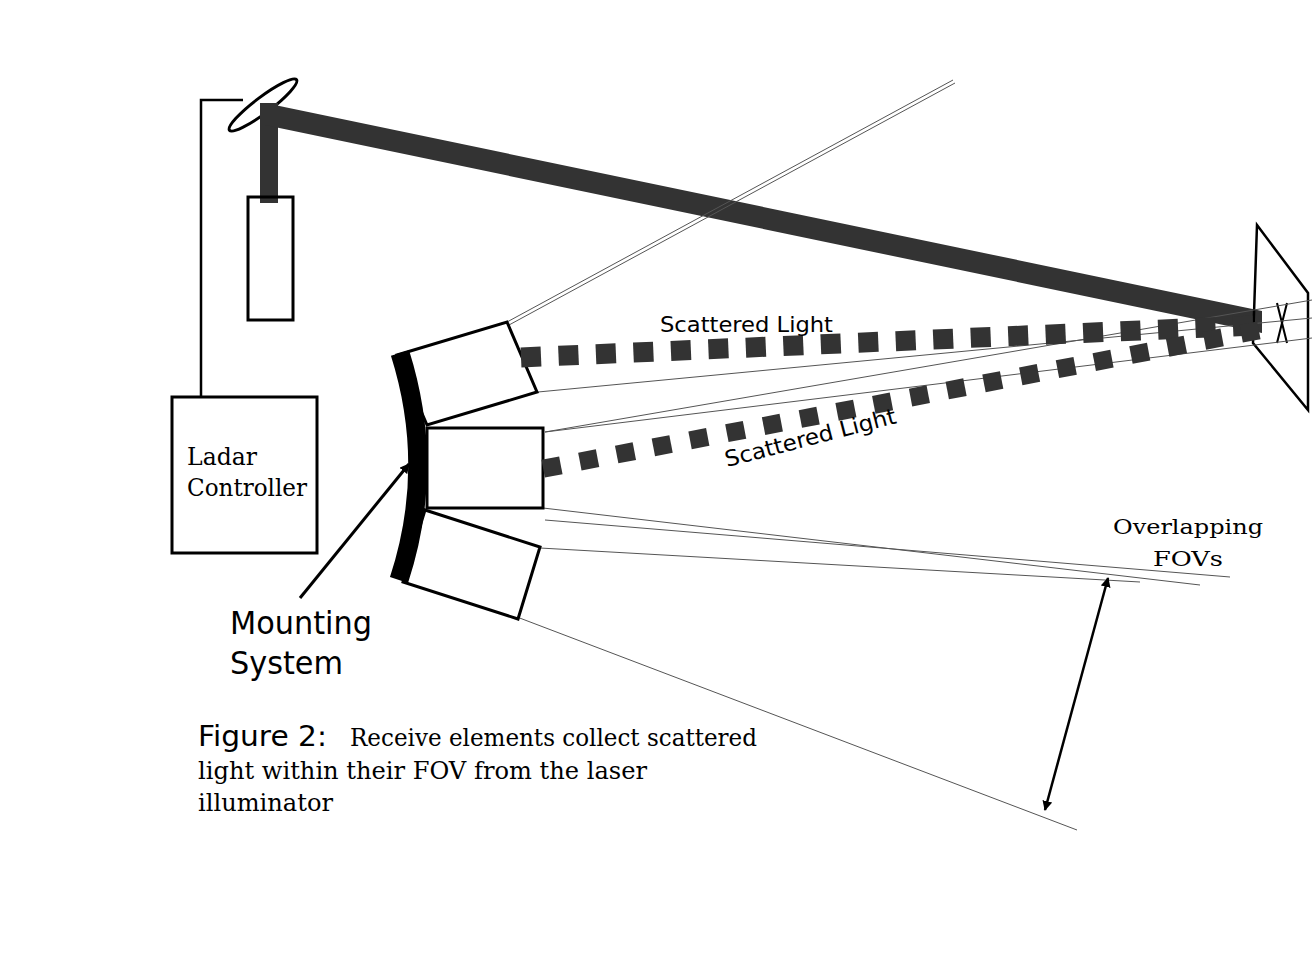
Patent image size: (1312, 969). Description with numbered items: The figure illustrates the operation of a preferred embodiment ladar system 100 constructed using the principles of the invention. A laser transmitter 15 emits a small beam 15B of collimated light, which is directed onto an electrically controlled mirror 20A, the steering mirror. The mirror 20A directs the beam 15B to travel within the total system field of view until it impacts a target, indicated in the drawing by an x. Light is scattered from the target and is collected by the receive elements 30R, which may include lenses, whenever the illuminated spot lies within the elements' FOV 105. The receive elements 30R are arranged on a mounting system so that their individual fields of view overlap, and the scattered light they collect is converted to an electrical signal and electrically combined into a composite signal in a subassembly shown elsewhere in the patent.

The steering mirror control 20A is at (358, 88).
The laser 15 is at (294, 229).
The laser beam 15B is at (563, 158).
The ladar system 100 is at (687, 65).
The receive elements 30R is at (470, 330).
The field of view 105 is at (1139, 694).